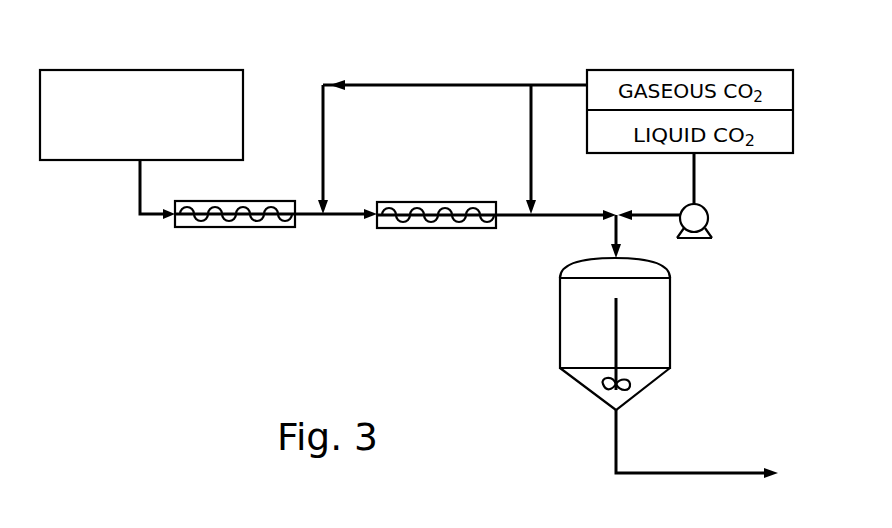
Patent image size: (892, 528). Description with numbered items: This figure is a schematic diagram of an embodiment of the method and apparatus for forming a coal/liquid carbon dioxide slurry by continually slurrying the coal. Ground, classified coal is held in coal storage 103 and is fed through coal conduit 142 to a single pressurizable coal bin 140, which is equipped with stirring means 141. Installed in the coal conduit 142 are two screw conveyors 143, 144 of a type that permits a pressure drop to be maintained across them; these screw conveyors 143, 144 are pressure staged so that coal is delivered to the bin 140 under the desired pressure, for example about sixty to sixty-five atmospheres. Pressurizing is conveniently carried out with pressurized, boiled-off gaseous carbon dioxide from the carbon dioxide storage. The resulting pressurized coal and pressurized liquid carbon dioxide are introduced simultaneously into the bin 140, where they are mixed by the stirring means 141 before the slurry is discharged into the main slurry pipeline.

The coal storage 103 is at (210, 83).
The pressurizable coal bin 140 is at (653, 317).
The stirring means 141 is at (613, 332).
The coal conduit 142 is at (343, 218).
The screw conveyor 143 is at (240, 229).
The screw conveyor 144 is at (430, 228).